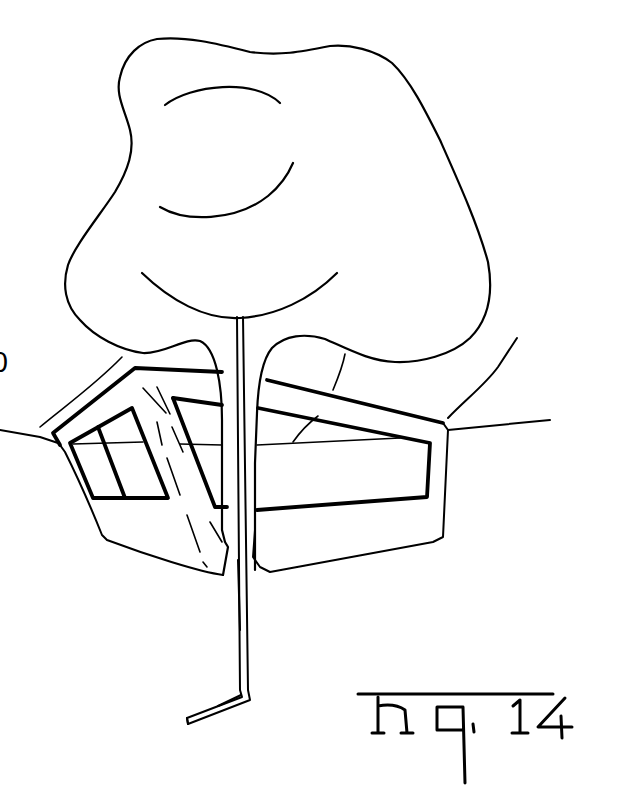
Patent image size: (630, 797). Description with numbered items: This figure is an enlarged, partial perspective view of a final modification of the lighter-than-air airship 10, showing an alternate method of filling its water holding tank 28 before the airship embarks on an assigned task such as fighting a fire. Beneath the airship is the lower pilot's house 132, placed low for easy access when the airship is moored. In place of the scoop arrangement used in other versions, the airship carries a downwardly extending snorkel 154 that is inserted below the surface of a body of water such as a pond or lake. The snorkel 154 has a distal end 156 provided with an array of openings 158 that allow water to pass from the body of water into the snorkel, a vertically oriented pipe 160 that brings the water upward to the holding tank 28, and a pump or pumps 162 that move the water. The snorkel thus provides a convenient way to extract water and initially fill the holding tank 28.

The lighter-than-air airship 10 is at (496, 365).
The holding tank 28 is at (133, 228).
The lower pilot's house 132 is at (439, 510).
The snorkel 154 is at (246, 544).
The distal end 156 is at (185, 725).
The openings 158 is at (234, 700).
The vertically oriented pipe 160 is at (245, 593).
The pump 162 is at (353, 537).